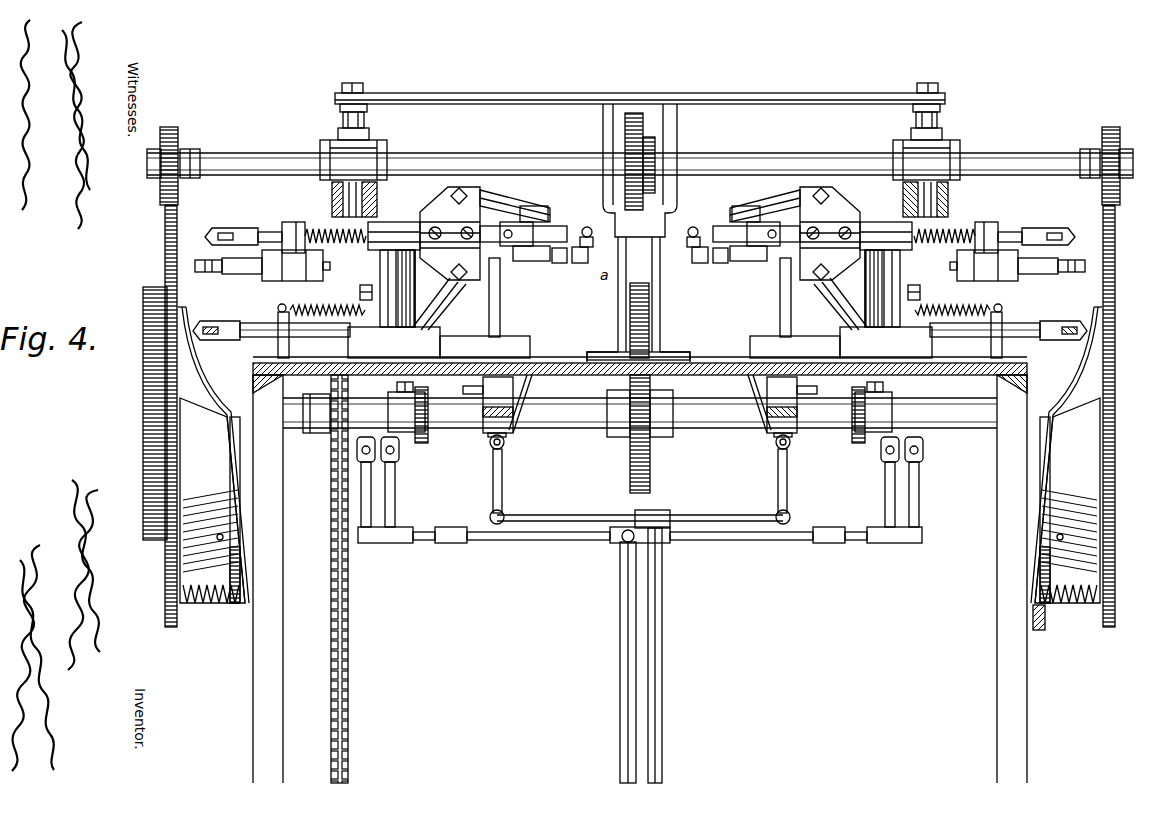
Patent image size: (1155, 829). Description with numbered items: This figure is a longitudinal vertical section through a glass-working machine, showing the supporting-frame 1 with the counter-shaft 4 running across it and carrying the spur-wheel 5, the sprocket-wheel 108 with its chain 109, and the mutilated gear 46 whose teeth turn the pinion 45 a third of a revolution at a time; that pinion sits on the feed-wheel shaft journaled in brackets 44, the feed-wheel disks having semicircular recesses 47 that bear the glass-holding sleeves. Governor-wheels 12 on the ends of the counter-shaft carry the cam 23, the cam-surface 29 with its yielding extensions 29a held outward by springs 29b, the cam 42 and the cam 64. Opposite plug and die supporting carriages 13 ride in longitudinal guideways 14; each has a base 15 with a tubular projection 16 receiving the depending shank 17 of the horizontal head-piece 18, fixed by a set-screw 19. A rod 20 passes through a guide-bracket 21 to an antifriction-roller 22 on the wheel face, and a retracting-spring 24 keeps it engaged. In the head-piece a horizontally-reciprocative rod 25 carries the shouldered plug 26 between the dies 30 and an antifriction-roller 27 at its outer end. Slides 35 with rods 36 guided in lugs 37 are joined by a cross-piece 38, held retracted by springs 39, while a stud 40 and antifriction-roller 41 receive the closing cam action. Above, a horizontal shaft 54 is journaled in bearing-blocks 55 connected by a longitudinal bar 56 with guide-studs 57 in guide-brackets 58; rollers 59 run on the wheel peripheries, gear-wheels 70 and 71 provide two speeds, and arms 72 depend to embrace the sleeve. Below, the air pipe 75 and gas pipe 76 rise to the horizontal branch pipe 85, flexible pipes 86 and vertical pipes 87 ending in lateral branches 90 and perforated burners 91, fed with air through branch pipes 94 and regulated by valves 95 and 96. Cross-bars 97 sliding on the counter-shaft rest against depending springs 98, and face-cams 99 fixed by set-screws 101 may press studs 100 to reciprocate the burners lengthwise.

The supporting-frame 1 is at (255, 690).
The counter-shaft 4 is at (565, 430).
The spur-wheel 5 is at (143, 430).
The governor-wheels 12 is at (165, 574).
The plug and die supporting carriages 13 is at (420, 318).
The longitudinal guideways 14 is at (520, 345).
The base 15 is at (432, 322).
The tubular projection 16 is at (382, 265).
The depending shank 17 is at (641, 288).
The horizontal head-piece 18 is at (393, 223).
The set-screw 19 is at (358, 290).
The rod 20 is at (248, 323).
The guide-bracket 21 is at (278, 350).
The antifriction-roller 22 is at (207, 322).
The cam 23 is at (205, 370).
The retracting-spring 24 is at (306, 310).
The horizontally-reciprocative rod 25 is at (505, 220).
The shouldered plug 26 is at (530, 232).
The antifriction-roller 27 is at (208, 232).
The cam-surface 29 is at (228, 458).
The yielding extensions 29a is at (232, 605).
The springs 29b is at (200, 607).
The dies 30 is at (540, 212).
The slides 35 is at (640, 233).
The rods 36 is at (328, 238).
The lugs 37 is at (640, 243).
The cross-piece 38 is at (290, 281).
The springs 39 is at (320, 232).
The stud 40 is at (240, 274).
The antifriction-roller 41 is at (205, 272).
The cam 42 is at (618, 283).
The brackets 44 is at (617, 320).
The pinion 45 is at (645, 305).
The mutilated gear 46 is at (650, 460).
The semicircular recesses 47 is at (615, 357).
The horizontal shaft 54 is at (540, 153).
The bearing-blocks 55 is at (345, 155).
The longitudinal bar 56 is at (826, 92).
The guide-studs 57 is at (349, 195).
The guide-brackets 58 is at (378, 195).
The rollers 59 is at (176, 128).
The cam 64 is at (1042, 650).
The gear-wheel 70 is at (634, 112).
The gear-wheel 71 is at (655, 140).
The arms 72 is at (607, 197).
The air pipe 75 is at (620, 612).
The gas pipe 76 is at (662, 613).
The horizontal branch pipe 85 is at (717, 515).
The flexible pipes 86 is at (493, 470).
The vertical pipes 87 is at (500, 312).
The lateral branch 90 is at (559, 264).
The perforated burners 91 is at (592, 241).
The branch pipes 94 is at (492, 544).
The valves 95 is at (506, 447).
The valves 96 is at (398, 455).
The cross-bar 97 is at (490, 447).
The depending springs 98 is at (526, 385).
The face-cams 99 is at (640, 415).
The studs 100 is at (472, 395).
The set-screws 101 is at (407, 380).
The sprocket-wheel 108 is at (316, 435).
The chain 109 is at (348, 638).